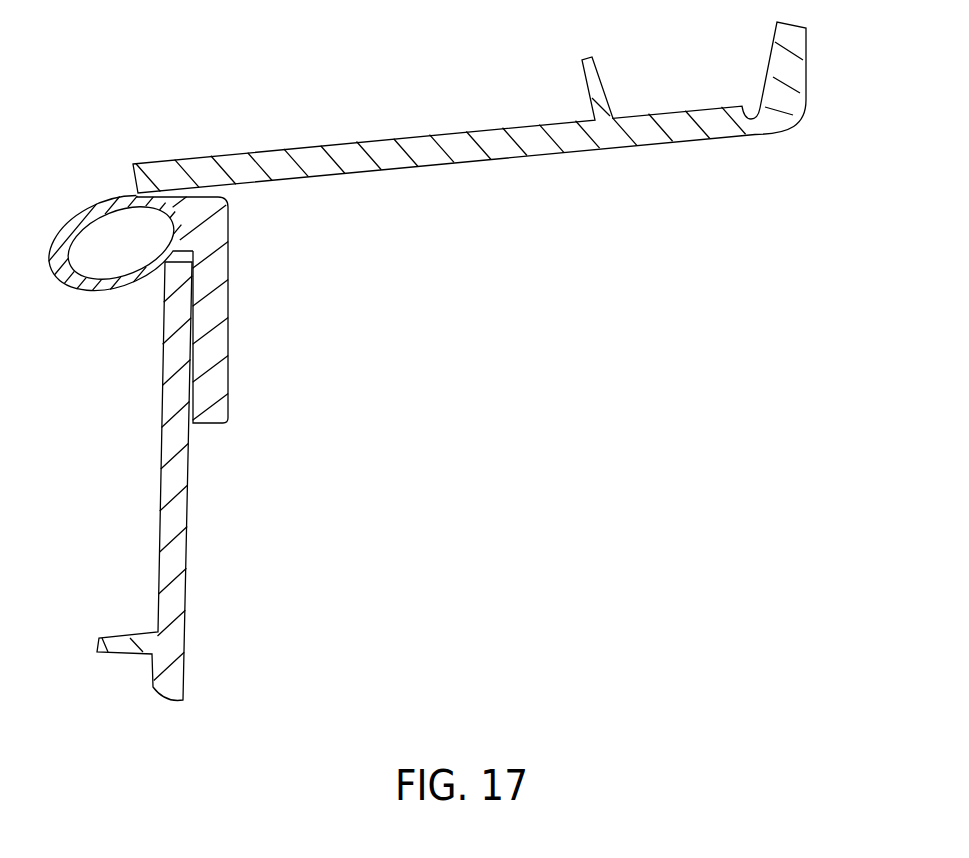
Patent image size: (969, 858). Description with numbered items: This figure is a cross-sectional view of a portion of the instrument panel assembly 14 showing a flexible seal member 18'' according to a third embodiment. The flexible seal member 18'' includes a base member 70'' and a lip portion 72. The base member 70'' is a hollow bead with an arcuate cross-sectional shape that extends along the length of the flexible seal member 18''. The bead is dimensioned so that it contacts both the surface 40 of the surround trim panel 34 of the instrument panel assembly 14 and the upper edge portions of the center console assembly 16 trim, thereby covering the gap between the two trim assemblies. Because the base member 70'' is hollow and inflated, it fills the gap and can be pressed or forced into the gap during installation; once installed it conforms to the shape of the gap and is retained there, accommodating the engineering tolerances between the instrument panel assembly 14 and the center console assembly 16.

The instrument panel assembly 14 is at (469, 127).
The surface 40 is at (435, 165).
The surround trim panel 34 is at (656, 143).
The flexible seal member 18'' is at (116, 218).
The base member 70'' is at (121, 218).
The lip portion 72 is at (228, 352).
The center console assembly 16 is at (208, 481).